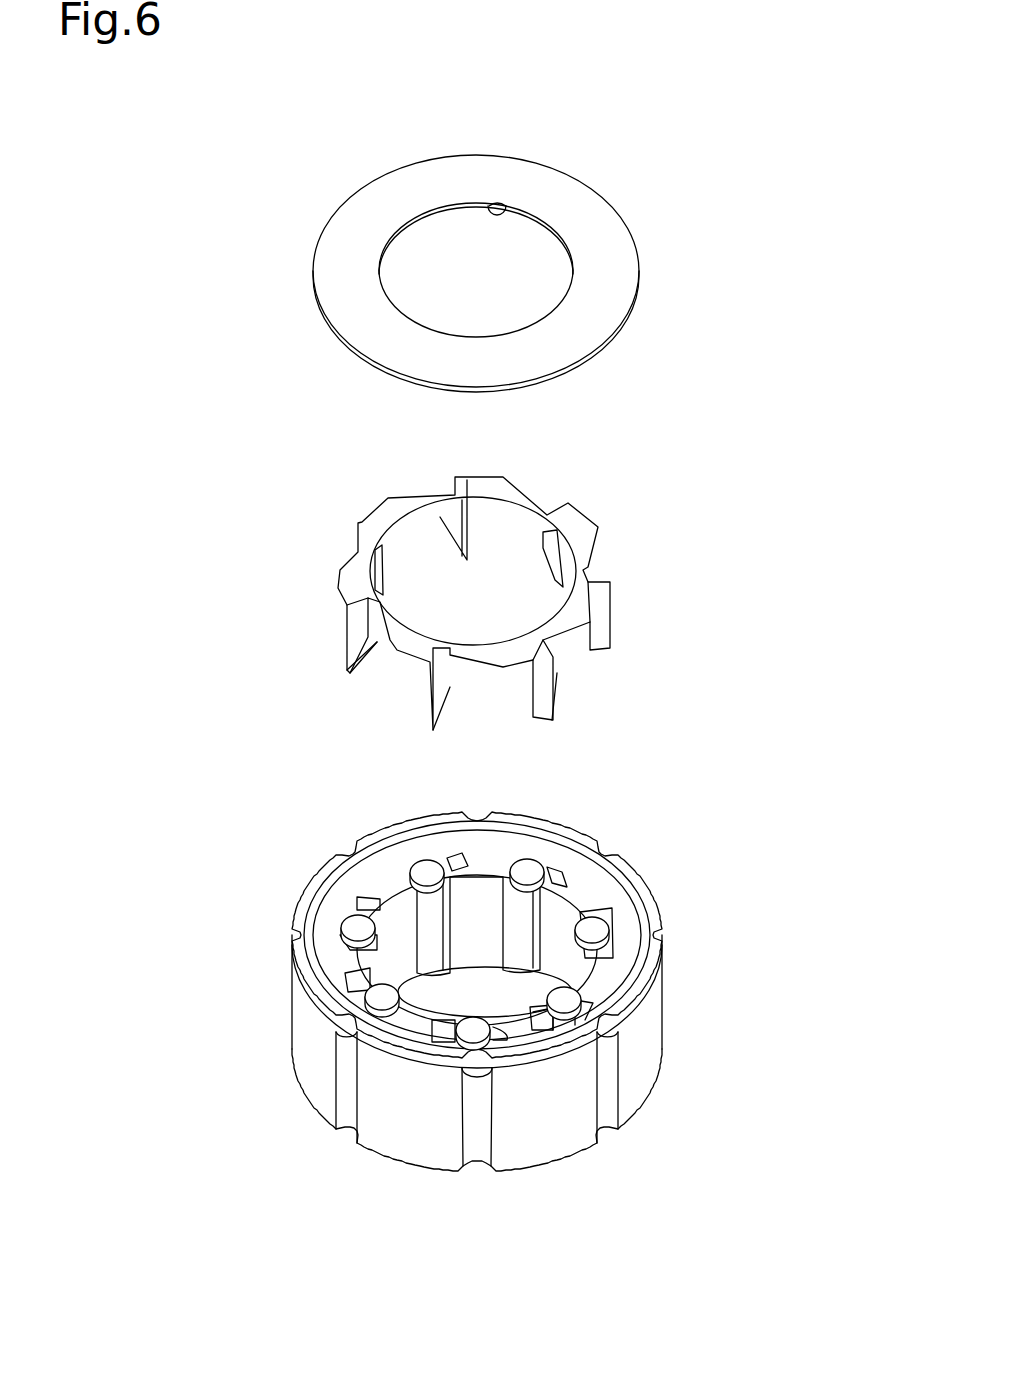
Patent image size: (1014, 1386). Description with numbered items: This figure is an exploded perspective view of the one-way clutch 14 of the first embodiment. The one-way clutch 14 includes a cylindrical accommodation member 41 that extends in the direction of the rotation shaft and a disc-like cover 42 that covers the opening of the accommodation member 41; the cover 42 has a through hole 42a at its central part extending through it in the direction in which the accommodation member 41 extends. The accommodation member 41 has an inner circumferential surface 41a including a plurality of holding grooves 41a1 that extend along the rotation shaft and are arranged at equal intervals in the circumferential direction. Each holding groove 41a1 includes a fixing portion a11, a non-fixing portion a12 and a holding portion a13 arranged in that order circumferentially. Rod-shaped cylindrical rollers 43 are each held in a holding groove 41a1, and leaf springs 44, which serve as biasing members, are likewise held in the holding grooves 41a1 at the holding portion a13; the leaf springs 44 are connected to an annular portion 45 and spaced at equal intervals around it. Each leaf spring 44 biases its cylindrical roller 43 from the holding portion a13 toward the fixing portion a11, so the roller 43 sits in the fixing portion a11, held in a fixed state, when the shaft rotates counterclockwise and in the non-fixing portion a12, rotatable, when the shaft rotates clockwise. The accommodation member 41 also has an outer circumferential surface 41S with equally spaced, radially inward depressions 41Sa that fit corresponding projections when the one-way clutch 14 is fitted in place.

The one-way clutch 14 is at (697, 201).
The cover 42 is at (316, 273).
The through hole 42a is at (498, 211).
The leaf spring 44 is at (578, 553).
The annular portion 45 is at (610, 598).
The accommodation member 41 is at (501, 1023).
The outer circumferential surface 41S is at (655, 1010).
The depression 41Sa is at (482, 810).
The inner circumferential surface 41a is at (400, 893).
The holding groove 41a1 is at (560, 885).
The cylindrical roller 43 is at (417, 867).
The fixing portion a11 is at (590, 1000).
The non-fixing portion a12 is at (562, 1002).
The holding portion a13 is at (540, 1012).